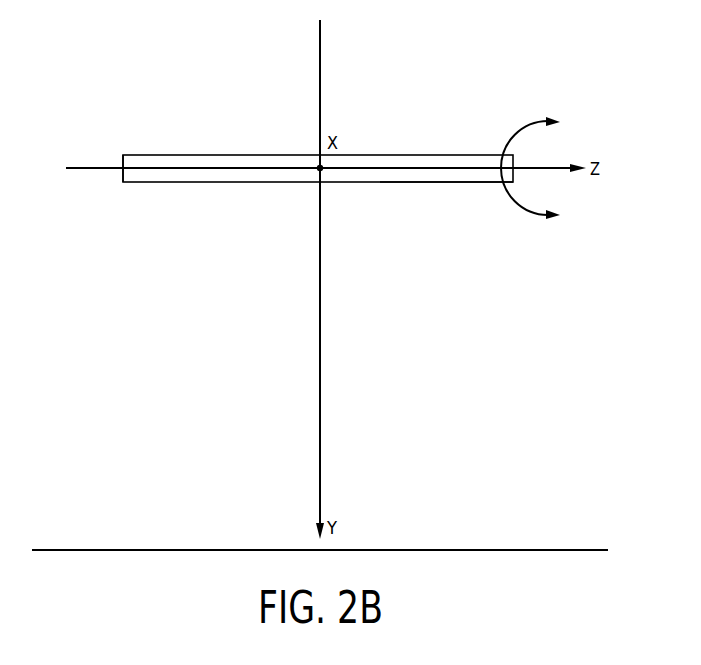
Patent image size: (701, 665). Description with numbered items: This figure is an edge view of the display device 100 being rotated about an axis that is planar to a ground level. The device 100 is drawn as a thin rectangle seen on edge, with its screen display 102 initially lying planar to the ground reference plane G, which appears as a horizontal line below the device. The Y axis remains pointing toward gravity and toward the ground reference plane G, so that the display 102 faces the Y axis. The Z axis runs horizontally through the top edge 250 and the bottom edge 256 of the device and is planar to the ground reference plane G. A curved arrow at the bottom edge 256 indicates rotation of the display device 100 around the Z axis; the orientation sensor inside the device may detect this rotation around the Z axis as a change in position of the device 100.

The display device 100 is at (181, 192).
The screen display 102 is at (383, 183).
The top edge 250 is at (133, 172).
The bottom edge 256 is at (520, 172).
The ground reference plane G is at (63, 541).